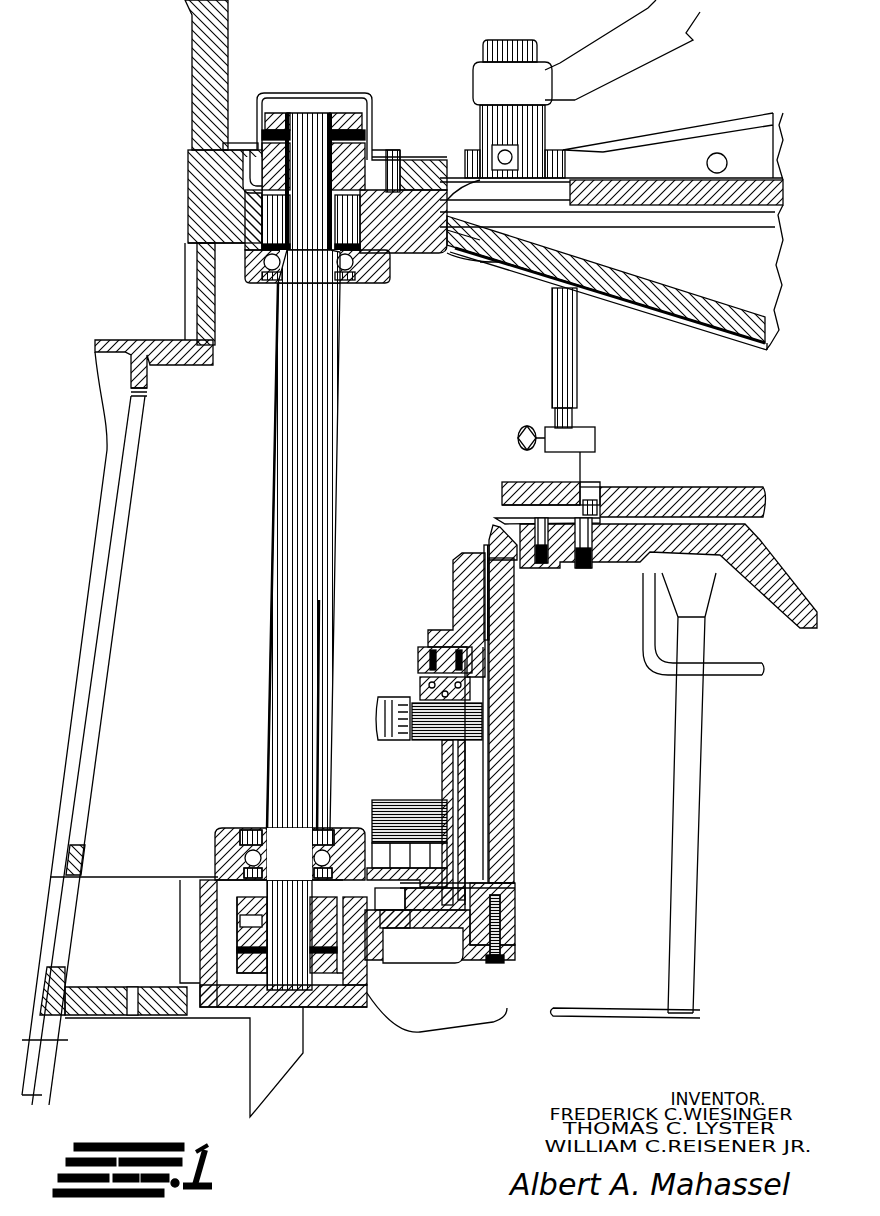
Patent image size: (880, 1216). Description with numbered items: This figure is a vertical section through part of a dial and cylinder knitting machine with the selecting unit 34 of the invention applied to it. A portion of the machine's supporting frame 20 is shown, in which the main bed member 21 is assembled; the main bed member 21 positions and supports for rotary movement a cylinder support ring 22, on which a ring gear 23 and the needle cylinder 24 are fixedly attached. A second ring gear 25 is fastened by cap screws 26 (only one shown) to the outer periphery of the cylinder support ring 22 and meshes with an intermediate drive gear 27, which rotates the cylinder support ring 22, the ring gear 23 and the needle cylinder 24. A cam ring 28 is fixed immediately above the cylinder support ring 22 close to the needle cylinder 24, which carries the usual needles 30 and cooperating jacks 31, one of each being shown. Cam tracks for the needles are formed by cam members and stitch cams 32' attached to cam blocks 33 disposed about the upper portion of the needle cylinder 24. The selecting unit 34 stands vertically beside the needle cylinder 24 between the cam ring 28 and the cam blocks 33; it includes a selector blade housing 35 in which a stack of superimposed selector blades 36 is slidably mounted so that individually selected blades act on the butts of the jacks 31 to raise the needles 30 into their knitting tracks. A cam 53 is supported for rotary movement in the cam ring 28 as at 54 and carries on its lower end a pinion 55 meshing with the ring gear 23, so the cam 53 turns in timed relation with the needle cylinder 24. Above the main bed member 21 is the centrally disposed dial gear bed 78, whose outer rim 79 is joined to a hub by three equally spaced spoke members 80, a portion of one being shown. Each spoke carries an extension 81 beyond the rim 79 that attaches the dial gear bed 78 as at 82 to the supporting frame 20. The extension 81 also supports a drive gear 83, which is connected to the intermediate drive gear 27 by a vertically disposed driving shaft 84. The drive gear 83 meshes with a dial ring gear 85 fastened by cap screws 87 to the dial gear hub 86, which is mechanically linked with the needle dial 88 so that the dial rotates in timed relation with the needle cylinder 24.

The supporting frame 20 is at (110, 607).
The main bed member 21 is at (142, 878).
The cylinder support ring 22 is at (463, 950).
The ring gear 23 is at (516, 906).
The needle cylinder 24 is at (510, 838).
The ring gear 25 is at (386, 920).
The cap screws 26 is at (385, 908).
The intermediate drive gear 27 is at (316, 975).
The cam ring 28 is at (390, 870).
The needle 30 is at (515, 613).
The jack 31 is at (486, 806).
The stitch cam 32' is at (448, 592).
The cam block 33 is at (455, 615).
The selecting unit 34 is at (380, 694).
The selector blade housing 35 is at (412, 692).
The selector blades 36 is at (432, 727).
The cam 53 is at (442, 786).
The rotary support location 54 is at (480, 886).
The pinion 55 is at (430, 908).
The dial gear bed 78 is at (652, 320).
The outer rim 79 is at (400, 252).
The spoke member 80 is at (486, 247).
The extension 81 is at (237, 248).
The attachment point 82 is at (188, 243).
The drive gear 83 is at (280, 113).
The driving shaft 84 is at (274, 560).
The dial ring gear 85 is at (388, 168).
The dial gear hub 86 is at (657, 192).
The cap screws 87 is at (403, 164).
The needle dial 88 is at (496, 517).